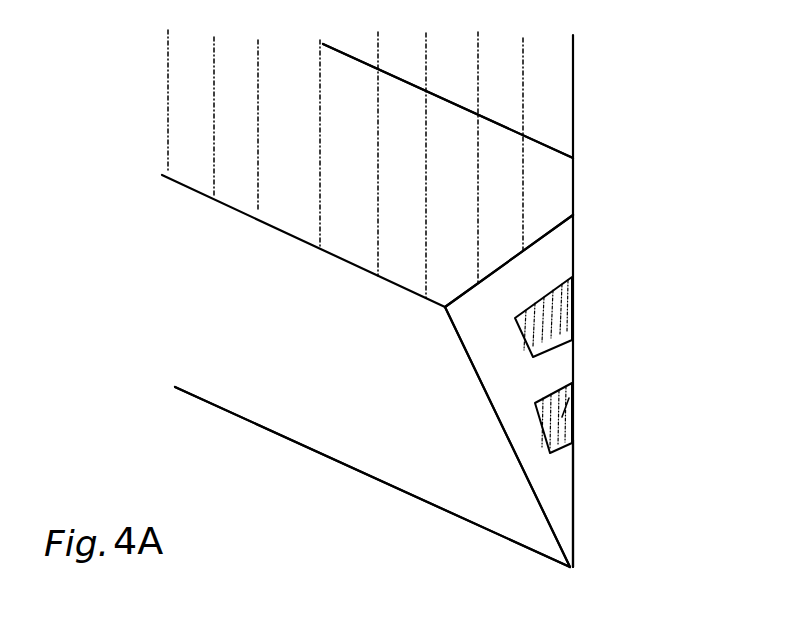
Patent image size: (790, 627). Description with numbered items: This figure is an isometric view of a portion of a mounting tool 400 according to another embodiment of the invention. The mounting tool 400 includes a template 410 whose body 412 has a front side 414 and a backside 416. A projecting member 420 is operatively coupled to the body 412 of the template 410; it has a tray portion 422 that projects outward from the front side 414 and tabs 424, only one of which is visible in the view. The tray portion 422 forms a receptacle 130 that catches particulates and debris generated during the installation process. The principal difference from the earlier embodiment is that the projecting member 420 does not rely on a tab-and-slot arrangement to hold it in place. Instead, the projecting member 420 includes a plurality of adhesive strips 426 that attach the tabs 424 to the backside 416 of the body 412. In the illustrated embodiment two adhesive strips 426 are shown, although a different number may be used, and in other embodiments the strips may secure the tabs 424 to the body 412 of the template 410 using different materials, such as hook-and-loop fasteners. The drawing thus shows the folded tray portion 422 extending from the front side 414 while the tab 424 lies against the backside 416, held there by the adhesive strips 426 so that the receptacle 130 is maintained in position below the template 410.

The receptacle 130 is at (491, 50).
The mounting tool 400 is at (608, 148).
The template 410 is at (576, 180).
The body 412 is at (560, 100).
The front side 414 is at (553, 125).
The backside 416 is at (573, 467).
The projecting member 420 is at (334, 477).
The tray portion 422 is at (272, 356).
The tab 424 is at (550, 263).
The adhesive strips 426 is at (562, 327).